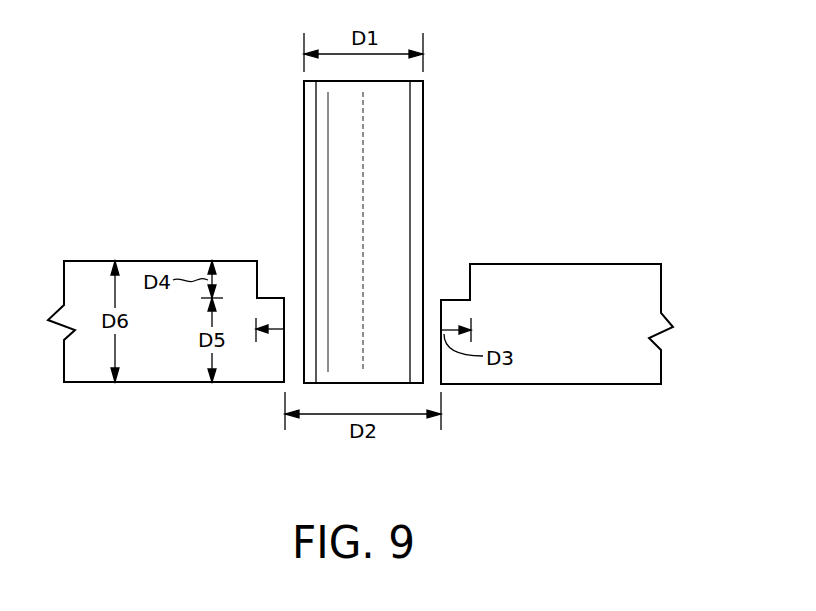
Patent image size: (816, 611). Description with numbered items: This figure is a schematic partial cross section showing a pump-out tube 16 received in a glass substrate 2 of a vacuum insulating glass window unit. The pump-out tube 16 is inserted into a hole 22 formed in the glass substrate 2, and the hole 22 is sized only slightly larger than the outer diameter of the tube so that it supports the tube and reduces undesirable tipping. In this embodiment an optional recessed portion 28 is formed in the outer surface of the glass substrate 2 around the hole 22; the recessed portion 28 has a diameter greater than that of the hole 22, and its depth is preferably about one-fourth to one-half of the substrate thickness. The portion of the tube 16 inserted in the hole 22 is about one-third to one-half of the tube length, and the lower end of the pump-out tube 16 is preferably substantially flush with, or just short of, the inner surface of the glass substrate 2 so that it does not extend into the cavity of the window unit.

The glass substrate 2 is at (646, 305).
The pump-out tube 16 is at (387, 173).
The hole 22 is at (430, 318).
The recessed portion 28 is at (270, 249).